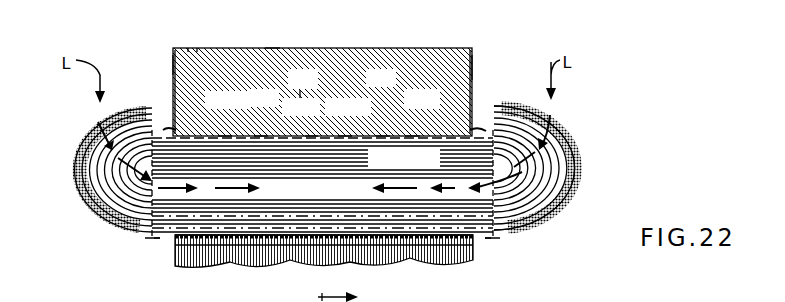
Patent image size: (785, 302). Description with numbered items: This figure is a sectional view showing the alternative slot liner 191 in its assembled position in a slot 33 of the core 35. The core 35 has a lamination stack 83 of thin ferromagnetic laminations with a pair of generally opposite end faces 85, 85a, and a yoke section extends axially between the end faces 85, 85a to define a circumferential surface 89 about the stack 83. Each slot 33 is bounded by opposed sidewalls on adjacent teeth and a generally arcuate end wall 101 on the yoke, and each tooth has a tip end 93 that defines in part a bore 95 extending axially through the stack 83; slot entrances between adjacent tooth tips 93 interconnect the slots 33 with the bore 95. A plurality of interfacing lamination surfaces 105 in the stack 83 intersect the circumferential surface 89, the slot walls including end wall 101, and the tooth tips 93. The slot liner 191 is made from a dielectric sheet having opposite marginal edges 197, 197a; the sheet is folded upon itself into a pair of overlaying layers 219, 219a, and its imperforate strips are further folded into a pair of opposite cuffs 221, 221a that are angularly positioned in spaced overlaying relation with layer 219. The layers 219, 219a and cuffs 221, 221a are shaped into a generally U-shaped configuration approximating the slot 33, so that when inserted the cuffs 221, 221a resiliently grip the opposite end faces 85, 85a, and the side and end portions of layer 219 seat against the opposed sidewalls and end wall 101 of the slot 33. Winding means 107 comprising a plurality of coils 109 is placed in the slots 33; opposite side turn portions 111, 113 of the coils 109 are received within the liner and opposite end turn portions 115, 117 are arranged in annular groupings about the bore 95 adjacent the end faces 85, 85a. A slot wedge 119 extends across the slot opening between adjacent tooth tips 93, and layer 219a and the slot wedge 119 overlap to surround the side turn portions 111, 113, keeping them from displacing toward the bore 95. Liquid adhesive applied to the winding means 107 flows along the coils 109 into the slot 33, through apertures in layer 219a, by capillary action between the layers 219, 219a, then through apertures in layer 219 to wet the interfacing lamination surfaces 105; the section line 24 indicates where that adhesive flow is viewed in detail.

The interfacing lamination surfaces 105 is at (197, 48).
The end face 85a is at (174, 62).
The circumferential surface 89 is at (271, 48).
The core 35 is at (442, 31).
The end face 85 is at (473, 68).
The cuff 221a is at (170, 130).
The layer 219 is at (224, 136).
The end wall 101 is at (260, 136).
The lamination stack 83 is at (292, 87).
The marginal edge 197 is at (312, 136).
The marginal edge 197a is at (345, 135).
The slot 33 is at (383, 132).
The slot liner 191 is at (414, 126).
The cuff 221 is at (481, 136).
The winding means 107 is at (586, 115).
The end turn portion 115 is at (72, 162).
The end turn portion 117 is at (583, 150).
The coil 109 is at (574, 193).
The layer 219a is at (442, 142).
The side turn portion 111 is at (263, 199).
The side turn portion 113 is at (324, 199).
The tip end 93 is at (176, 243).
The bore 95 is at (443, 246).
The slot wedge 119 is at (496, 240).
The section line 24 is at (348, 294).